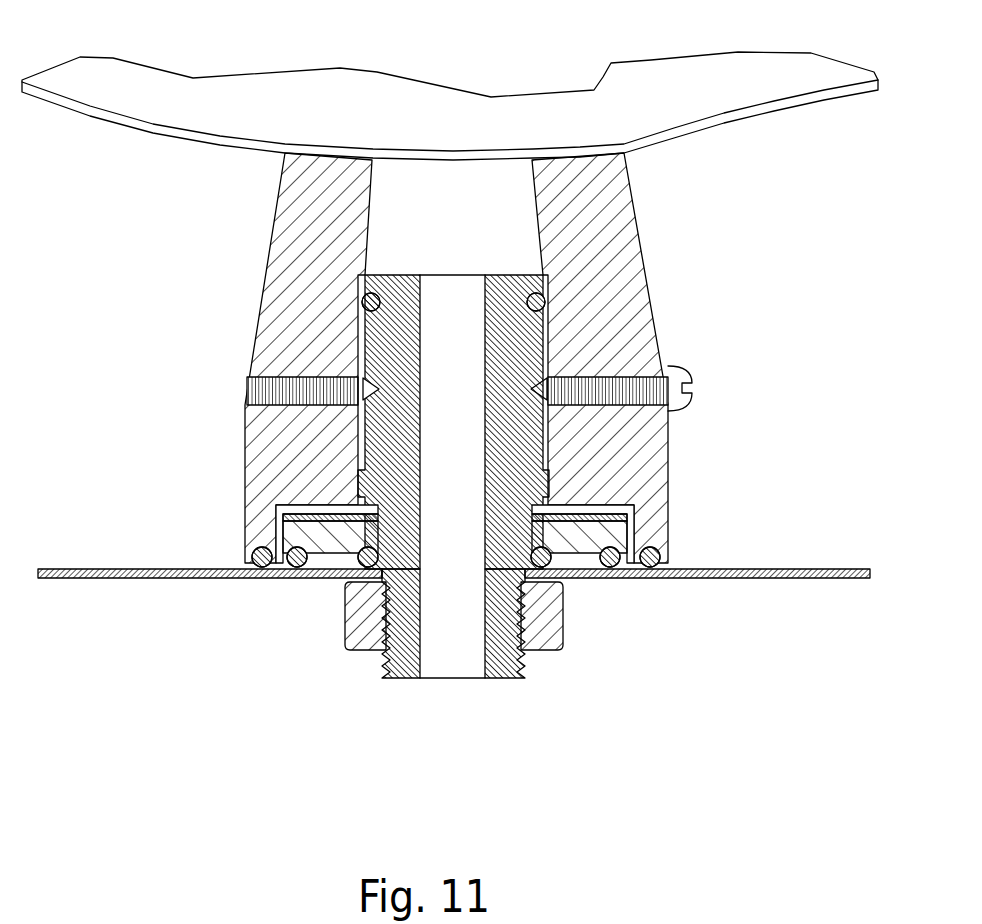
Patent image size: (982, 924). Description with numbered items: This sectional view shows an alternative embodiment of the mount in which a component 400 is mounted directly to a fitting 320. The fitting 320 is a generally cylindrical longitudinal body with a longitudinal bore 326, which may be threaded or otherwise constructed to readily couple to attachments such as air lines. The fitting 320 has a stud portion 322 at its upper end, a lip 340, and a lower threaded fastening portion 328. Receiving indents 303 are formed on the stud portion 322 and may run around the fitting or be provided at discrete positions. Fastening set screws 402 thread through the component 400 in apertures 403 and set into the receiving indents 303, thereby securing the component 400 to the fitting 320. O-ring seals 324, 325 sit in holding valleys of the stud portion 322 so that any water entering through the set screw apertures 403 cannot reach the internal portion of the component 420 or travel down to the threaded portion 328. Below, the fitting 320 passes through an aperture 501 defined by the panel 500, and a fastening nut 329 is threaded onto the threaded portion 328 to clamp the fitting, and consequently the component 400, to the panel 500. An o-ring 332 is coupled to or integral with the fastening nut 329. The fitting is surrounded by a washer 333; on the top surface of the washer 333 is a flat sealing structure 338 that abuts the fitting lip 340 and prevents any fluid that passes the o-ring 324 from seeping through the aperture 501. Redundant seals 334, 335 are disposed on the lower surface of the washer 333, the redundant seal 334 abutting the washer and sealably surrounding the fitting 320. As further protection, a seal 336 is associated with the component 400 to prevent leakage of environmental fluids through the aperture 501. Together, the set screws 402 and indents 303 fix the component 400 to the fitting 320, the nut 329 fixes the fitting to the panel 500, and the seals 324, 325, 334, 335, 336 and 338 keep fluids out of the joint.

The component 400 is at (150, 132).
The internal portion of the component 420 is at (442, 183).
The stud portion 322 is at (372, 342).
The O-ring seal 324 is at (700, 462).
The aperture 403 is at (265, 393).
The fastening set screw 402 is at (670, 367).
The fitting 320 is at (513, 275).
The longitudinal bore 326 is at (438, 303).
The O-ring seal 325 is at (542, 305).
The receiving indent 303 is at (380, 388).
The o-ring 332 is at (563, 593).
The fastening nut 329 is at (557, 650).
The threaded fastening portion 328 is at (523, 676).
The panel 500 is at (857, 568).
The aperture 501 is at (305, 580).
The lip 340 is at (305, 507).
The washer 333 is at (260, 546).
The flat sealing structure 338 is at (597, 517).
The redundant seal 334 is at (560, 530).
The redundant seal 335 is at (600, 553).
The seal 336 is at (660, 563).